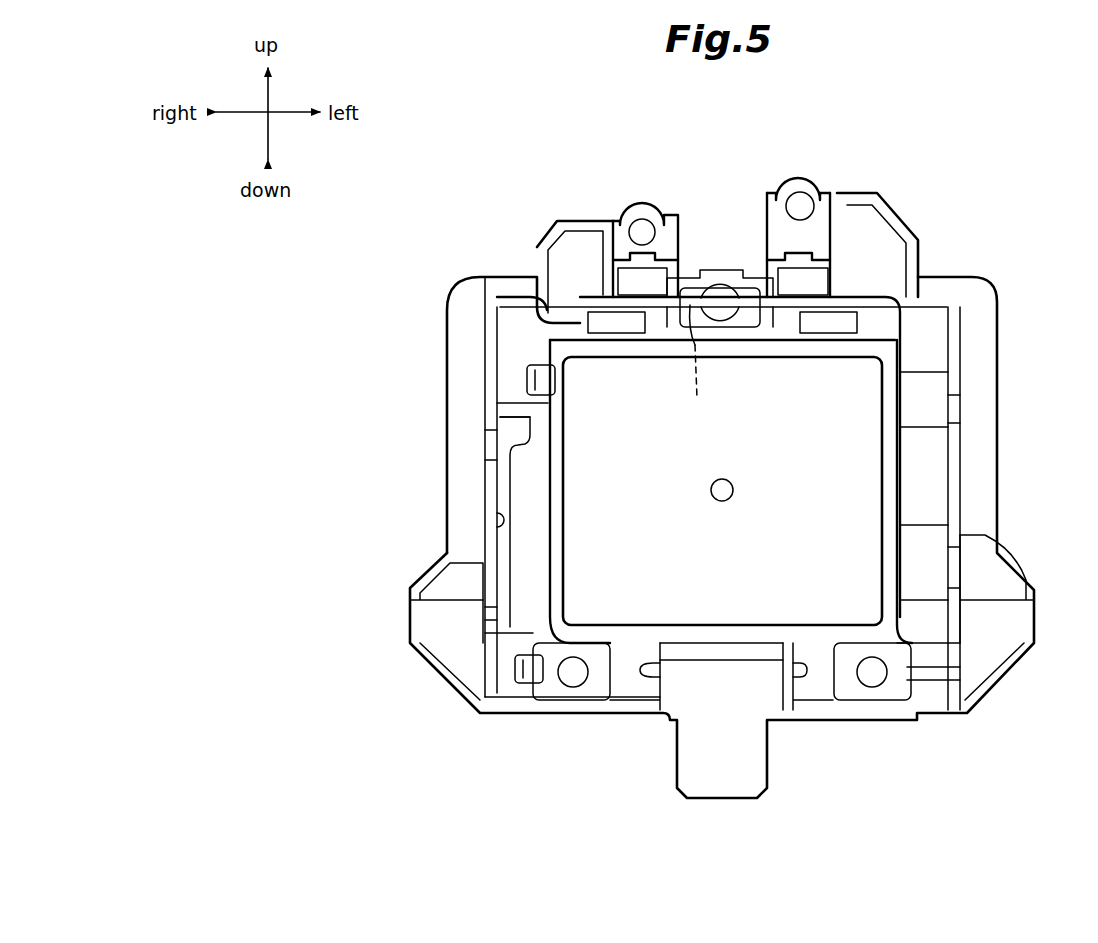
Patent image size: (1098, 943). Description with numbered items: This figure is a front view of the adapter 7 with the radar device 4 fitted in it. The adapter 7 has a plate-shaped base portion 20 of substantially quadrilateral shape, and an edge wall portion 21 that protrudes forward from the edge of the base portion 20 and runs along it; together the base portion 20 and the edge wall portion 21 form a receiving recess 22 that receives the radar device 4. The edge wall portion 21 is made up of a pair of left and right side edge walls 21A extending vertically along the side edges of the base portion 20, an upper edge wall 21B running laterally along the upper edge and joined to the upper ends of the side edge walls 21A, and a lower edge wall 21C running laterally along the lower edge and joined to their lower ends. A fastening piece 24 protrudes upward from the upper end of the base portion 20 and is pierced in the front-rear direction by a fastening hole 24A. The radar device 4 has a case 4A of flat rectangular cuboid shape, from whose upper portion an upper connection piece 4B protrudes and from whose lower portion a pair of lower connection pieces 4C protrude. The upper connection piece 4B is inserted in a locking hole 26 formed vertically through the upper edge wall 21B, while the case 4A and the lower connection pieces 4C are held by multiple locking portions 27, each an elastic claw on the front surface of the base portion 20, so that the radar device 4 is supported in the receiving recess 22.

The radar device 4 is at (910, 482).
The case 4A is at (890, 510).
The upper connection piece 4B is at (708, 292).
The lower connection pieces 4C is at (552, 688).
The adapter 7 is at (982, 266).
The base portion 20 is at (520, 498).
The edge wall portion 21 is at (966, 382).
The side edge walls 21A is at (490, 408).
The upper edge wall 21B is at (600, 302).
The lower edge wall 21C is at (623, 705).
The receiving recess 22 is at (497, 525).
The fastening piece 24 is at (817, 190).
The fastening hole 24A is at (798, 200).
The locking hole 26 is at (698, 365).
The locking portions 27 is at (524, 378).